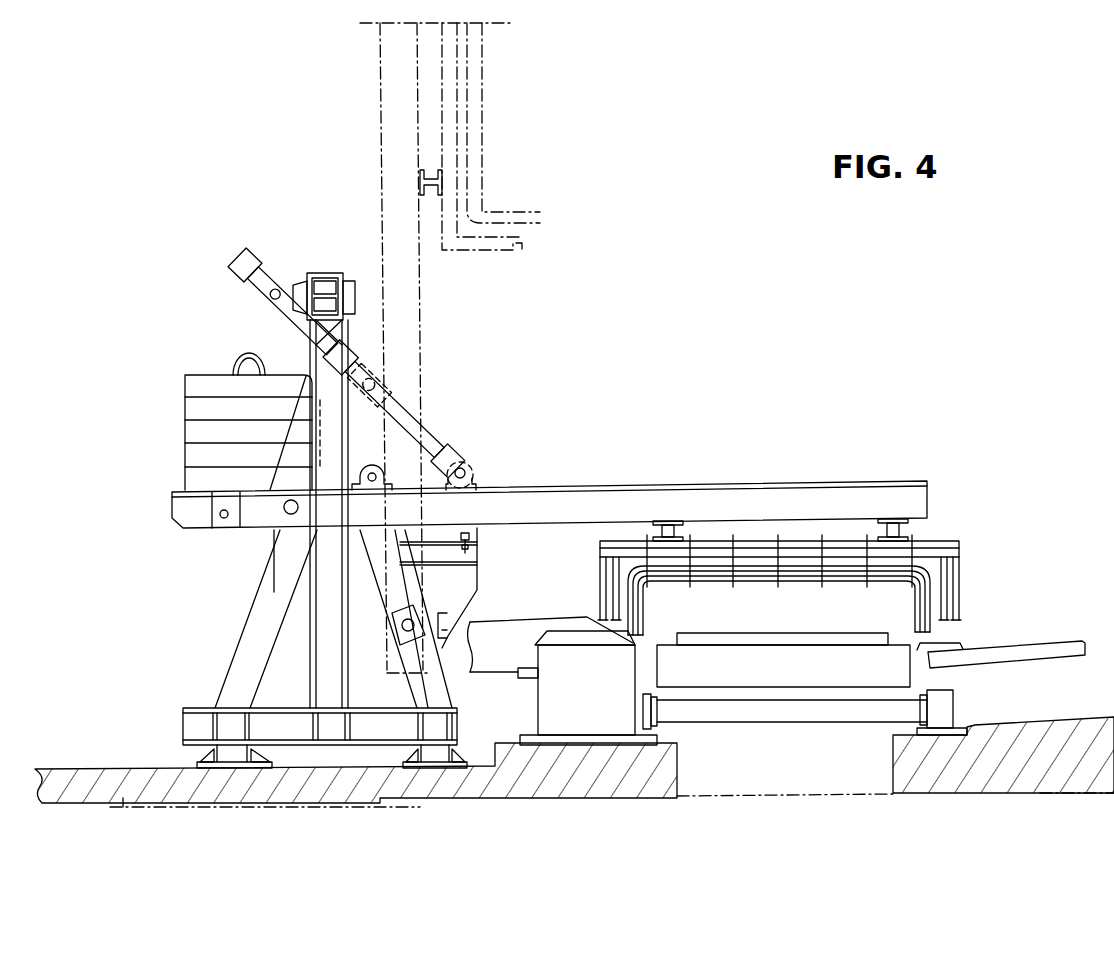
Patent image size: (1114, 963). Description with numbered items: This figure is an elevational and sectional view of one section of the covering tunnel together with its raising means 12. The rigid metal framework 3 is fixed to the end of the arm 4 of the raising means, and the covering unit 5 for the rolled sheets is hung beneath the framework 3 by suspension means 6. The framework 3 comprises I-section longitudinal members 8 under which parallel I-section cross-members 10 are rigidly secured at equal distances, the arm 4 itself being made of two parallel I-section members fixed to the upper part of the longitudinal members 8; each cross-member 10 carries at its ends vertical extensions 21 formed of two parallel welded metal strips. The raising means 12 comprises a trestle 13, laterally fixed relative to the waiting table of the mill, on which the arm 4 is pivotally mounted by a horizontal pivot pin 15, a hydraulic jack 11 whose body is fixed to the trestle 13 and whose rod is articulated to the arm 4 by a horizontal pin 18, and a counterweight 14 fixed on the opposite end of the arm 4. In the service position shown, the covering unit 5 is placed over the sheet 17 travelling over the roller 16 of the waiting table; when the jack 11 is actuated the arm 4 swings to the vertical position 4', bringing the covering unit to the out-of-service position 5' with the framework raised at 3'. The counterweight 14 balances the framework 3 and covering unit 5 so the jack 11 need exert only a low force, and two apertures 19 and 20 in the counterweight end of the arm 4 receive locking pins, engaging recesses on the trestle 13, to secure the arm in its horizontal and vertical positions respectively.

The rigid metal framework 3 is at (654, 545).
The arm 4 is at (549, 490).
The covering unit 5 is at (957, 632).
The suspension means 6 is at (866, 540).
The longitudinal members 8 is at (906, 528).
The cross-members 10 is at (948, 545).
The hydraulic jack 11 is at (300, 290).
The raising means 12 is at (227, 415).
The trestle 13 is at (243, 656).
The counterweight 14 is at (190, 406).
The horizontal pivot pin 15 is at (372, 472).
The roller 16 is at (803, 652).
The sheet 17 is at (738, 640).
The horizontal pin 18 is at (468, 468).
The aperture 19 is at (224, 519).
The aperture 20 is at (290, 515).
The vertical extensions 21 is at (600, 583).
The framework in out-of-service position 3' is at (482, 159).
The vertical position of the arm 4' is at (426, 348).
The out-of-service position of the covering unit 5' is at (503, 123).